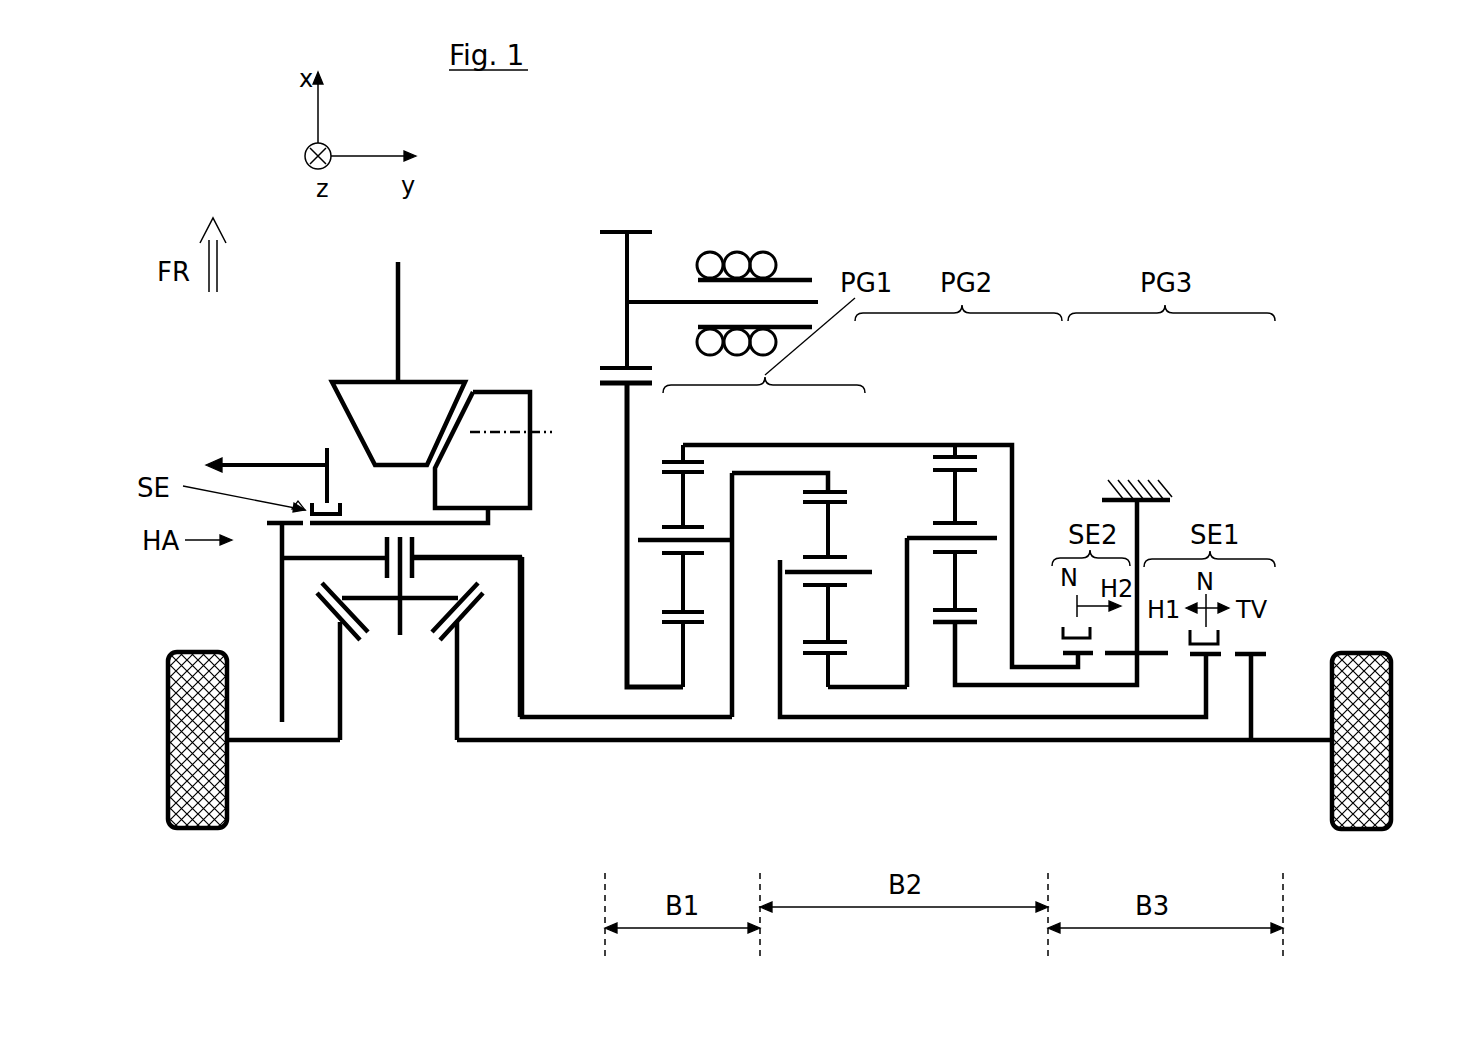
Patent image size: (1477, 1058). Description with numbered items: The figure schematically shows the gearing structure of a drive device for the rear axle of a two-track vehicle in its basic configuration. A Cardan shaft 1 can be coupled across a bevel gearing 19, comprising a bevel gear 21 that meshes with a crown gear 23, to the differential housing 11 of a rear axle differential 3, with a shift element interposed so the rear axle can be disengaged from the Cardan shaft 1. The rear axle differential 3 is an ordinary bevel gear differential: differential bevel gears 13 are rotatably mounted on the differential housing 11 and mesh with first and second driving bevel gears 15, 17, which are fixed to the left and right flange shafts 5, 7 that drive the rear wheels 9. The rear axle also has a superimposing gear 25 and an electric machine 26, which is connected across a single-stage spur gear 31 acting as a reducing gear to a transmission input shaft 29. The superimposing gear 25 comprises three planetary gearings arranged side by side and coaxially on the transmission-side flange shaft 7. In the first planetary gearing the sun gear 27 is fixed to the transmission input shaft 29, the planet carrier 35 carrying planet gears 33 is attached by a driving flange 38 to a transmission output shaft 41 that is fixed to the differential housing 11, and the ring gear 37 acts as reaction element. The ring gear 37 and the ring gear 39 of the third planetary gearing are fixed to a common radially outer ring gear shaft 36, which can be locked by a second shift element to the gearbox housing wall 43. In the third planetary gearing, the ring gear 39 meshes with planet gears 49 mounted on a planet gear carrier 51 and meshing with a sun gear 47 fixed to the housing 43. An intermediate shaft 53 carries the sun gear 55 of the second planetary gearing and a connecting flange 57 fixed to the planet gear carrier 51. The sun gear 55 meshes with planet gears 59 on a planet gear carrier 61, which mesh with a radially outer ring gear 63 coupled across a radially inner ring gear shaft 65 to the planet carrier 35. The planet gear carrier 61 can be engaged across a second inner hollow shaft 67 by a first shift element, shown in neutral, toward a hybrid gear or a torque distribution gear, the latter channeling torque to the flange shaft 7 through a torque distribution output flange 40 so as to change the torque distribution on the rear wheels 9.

The Cardan shaft 1 is at (395, 324).
The rear axle differential 3 is at (284, 603).
The left flange shaft 5 is at (288, 748).
The transmission-side flange shaft 7 is at (548, 745).
The rear wheels 9 is at (168, 704).
The differential housing 11 is at (523, 556).
The differential bevel gear 13 is at (399, 628).
The first driving bevel gear 15 is at (345, 690).
The second driving bevel gear 17 is at (455, 700).
The bevel gearing 19 is at (547, 326).
The bevel gear 21 is at (450, 380).
The crown gear 23 is at (516, 391).
The superimposing gear 25 is at (1202, 251).
The electric machine 26 is at (715, 250).
The sun gear 27 is at (688, 656).
The transmission input shaft 29 is at (650, 683).
The single-stage spur gear 31 is at (606, 410).
The planet gears 33 is at (733, 475).
The planet carrier 35 is at (652, 538).
The radially outer ring gear shaft 36 is at (950, 444).
The ring gear 37 is at (684, 502).
The driving flange 38 is at (730, 670).
The ring gear 39 is at (958, 512).
The torque distribution output flange 40 is at (1252, 706).
The transmission output shaft 41 is at (551, 710).
The gearbox housing wall 43 is at (1166, 480).
The sun gear 47 is at (1014, 562).
The planet gears 49 is at (990, 538).
The planet gear carrier 51 is at (1000, 558).
The intermediate shaft 53 is at (853, 692).
The sun gear 55 is at (872, 572).
The connecting flange 57 is at (908, 660).
The planet gears 59 is at (830, 530).
The planet gear carrier 61 is at (833, 656).
The ring gear 63 is at (838, 491).
The radially inner ring gear shaft 65 is at (758, 476).
The second inner hollow shaft 67 is at (995, 720).